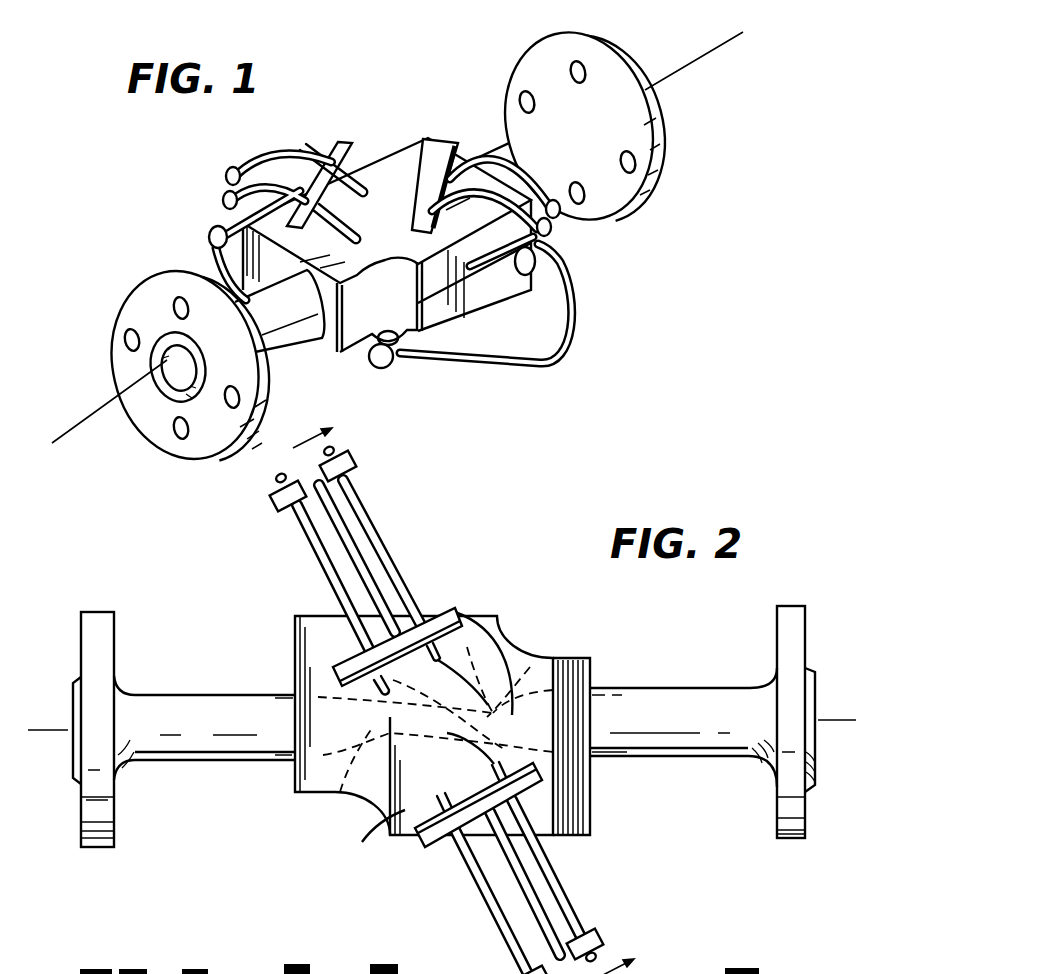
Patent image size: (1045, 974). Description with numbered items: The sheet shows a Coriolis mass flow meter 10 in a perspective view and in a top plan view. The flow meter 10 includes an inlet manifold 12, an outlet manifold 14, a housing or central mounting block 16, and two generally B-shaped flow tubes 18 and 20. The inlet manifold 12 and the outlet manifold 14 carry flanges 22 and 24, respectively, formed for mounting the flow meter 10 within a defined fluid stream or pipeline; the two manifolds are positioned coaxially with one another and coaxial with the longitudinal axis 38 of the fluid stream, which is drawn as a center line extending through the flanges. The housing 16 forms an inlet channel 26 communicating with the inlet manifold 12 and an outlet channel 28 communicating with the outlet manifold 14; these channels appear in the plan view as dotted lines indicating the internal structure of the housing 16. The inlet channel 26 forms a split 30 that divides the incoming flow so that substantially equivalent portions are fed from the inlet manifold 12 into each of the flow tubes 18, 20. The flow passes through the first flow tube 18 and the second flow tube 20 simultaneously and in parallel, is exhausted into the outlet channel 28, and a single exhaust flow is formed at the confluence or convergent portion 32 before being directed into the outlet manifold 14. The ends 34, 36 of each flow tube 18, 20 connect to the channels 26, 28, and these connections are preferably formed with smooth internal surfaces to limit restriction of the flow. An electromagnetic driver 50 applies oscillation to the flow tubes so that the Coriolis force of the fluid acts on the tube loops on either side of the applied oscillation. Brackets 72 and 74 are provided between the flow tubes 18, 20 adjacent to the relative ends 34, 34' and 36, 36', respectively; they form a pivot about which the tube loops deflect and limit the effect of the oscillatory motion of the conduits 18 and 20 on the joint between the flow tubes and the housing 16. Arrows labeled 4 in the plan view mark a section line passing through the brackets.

In FIG. 1, the flowmeter 10 is at (424, 118).
In FIG. 2, the flowmeter 10 is at (513, 528).
In FIG. 1, the inlet pipe section 12 is at (158, 366).
In FIG. 2, the inlet pipe section 12 is at (250, 700).
In FIG. 1, the outlet pipe section 14 is at (508, 146).
In FIG. 2, the outlet pipe section 14 is at (693, 697).
In FIG. 1, the body 16 is at (406, 189).
In FIG. 2, the body 16 is at (560, 813).
In FIG. 1, the electrode rod 18 is at (260, 155).
In FIG. 2, the electrode rod 18 is at (365, 510).
In FIG. 1, the electrode rod 20 is at (233, 200).
In FIG. 2, the electrode rod 20 is at (313, 548).
In FIG. 1, the inlet flange 22 is at (117, 298).
In FIG. 2, the inlet flange 22 is at (95, 643).
In FIG. 1, the outlet flange 24 is at (593, 58).
In FIG. 2, the outlet flange 24 is at (778, 641).
In FIG. 2, the inlet passage 26 is at (320, 745).
In FIG. 2, the body flange 28 is at (585, 668).
In FIG. 2, the flow passage 30 is at (352, 790).
In FIG. 2, the outlet passage 32 is at (528, 673).
In FIG. 1, the electrode blade 34 is at (417, 177).
In FIG. 2, the electrode blade 34 is at (468, 761).
In FIG. 1, the electrode blade 34' is at (370, 234).
In FIG. 2, the electrode blade 34' is at (366, 842).
In FIG. 1, the electrode blade 36 is at (328, 168).
In FIG. 2, the electrode blade 36 is at (478, 638).
In FIG. 1, the electrode blade 36' is at (352, 186).
In FIG. 2, the electrode blade 36' is at (511, 648).
In FIG. 1, the center line 38 is at (113, 406).
In FIG. 2, the center line 38 is at (43, 733).
In FIG. 1, the ground ring 50 is at (392, 368).
In FIG. 2, the lower mounting plate 72 is at (435, 847).
In FIG. 2, the upper mounting plate 74 is at (447, 611).
In FIG. 2, the section line 4- 4 is at (475, 688).